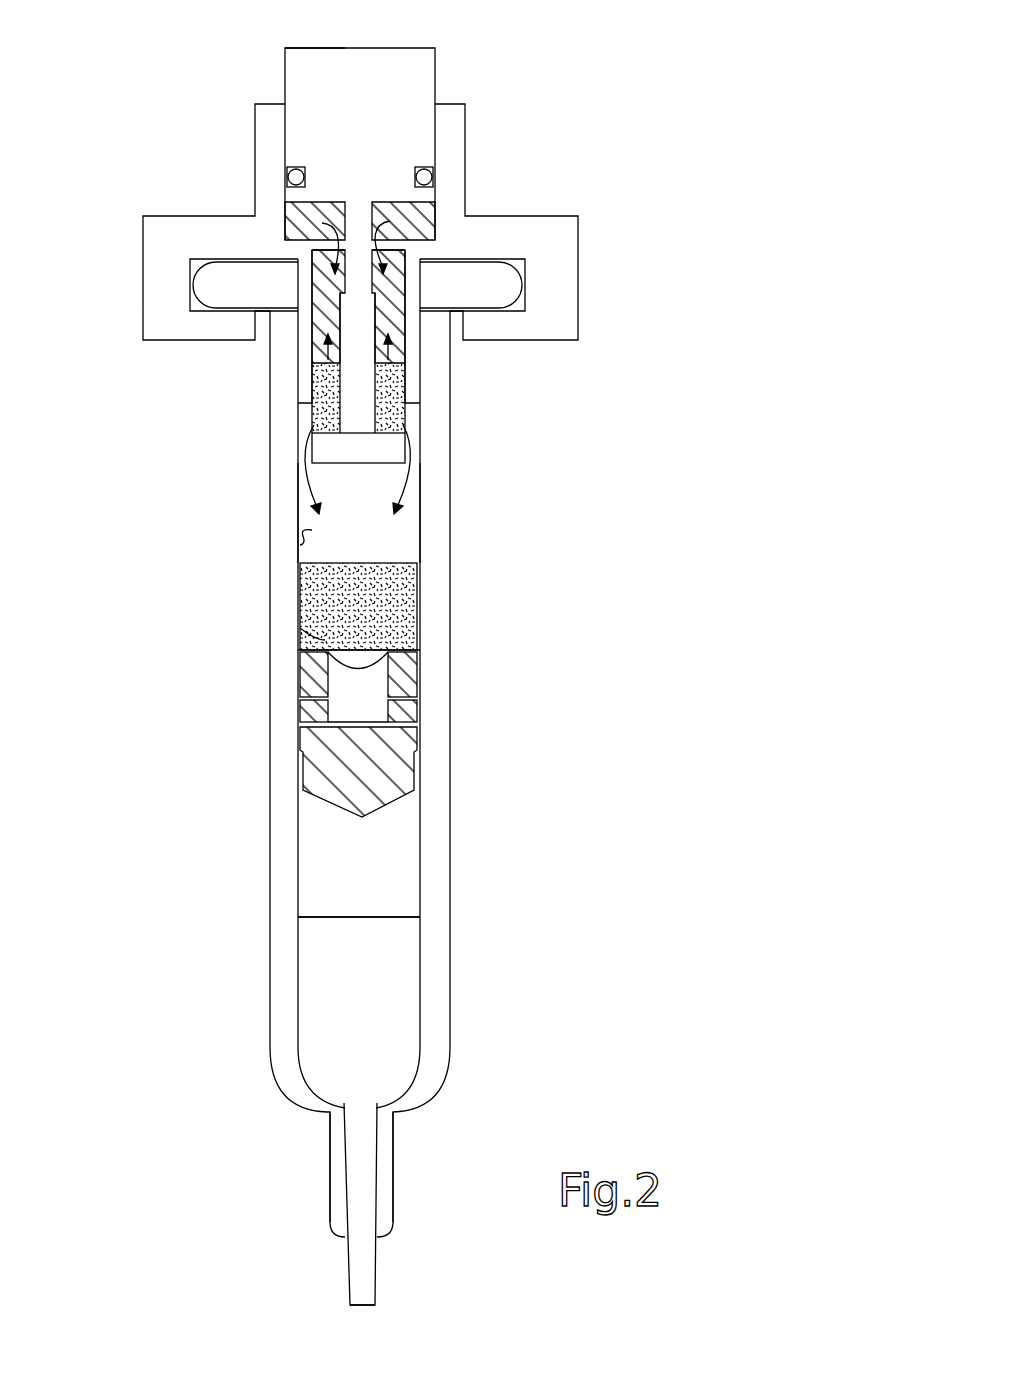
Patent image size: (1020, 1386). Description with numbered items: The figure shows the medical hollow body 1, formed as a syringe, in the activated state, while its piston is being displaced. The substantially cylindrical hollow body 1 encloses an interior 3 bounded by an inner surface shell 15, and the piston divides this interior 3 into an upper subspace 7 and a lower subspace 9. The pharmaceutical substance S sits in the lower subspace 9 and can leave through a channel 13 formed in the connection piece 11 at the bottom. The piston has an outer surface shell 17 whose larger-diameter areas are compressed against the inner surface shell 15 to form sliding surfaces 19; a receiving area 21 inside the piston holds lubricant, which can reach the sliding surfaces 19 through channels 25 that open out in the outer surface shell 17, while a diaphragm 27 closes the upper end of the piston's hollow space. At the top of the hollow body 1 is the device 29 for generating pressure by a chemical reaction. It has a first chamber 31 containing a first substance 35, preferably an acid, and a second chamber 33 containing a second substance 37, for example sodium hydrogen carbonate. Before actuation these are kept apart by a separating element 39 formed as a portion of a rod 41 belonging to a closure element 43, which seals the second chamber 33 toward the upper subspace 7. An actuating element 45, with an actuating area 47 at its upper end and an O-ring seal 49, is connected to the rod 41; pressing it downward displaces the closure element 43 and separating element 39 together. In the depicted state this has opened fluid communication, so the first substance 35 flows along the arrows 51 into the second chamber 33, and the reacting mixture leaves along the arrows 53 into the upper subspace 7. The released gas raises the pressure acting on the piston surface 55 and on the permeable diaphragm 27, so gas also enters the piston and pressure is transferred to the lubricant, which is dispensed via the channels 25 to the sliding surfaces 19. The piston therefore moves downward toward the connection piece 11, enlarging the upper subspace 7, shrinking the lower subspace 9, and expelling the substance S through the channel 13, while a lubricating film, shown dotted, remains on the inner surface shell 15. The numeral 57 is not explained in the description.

The medical hollow body 1 is at (458, 619).
The interior 3 is at (430, 817).
The upper subspace 7 is at (402, 533).
The lower subspace 9 is at (405, 862).
The connection piece 11 is at (380, 1198).
The channel 13 is at (362, 1153).
The inner surface shell 15 is at (300, 540).
The outer surface shell 17 is at (420, 733).
The sliding surfaces 19 is at (297, 716).
The receiving area 21 is at (327, 695).
The channels 25 is at (327, 722).
The diaphragm 27 is at (300, 628).
The device 29 is at (490, 95).
The first chamber 31 is at (310, 210).
The second chamber 33 is at (323, 265).
The first substance 35 is at (421, 216).
The second substance 37 is at (390, 327).
The separating element 39 is at (363, 278).
The rod 41 is at (363, 302).
The closure element 43 is at (393, 452).
The actuating element 45 is at (430, 70).
The actuating area 47 is at (322, 47).
The seal 49 is at (428, 176).
The arrows 51 is at (347, 252).
The arrows 53 is at (298, 483).
The surface 55 is at (418, 650).
The granulate 57 is at (430, 578).
The pharmaceutical substance S is at (395, 1003).